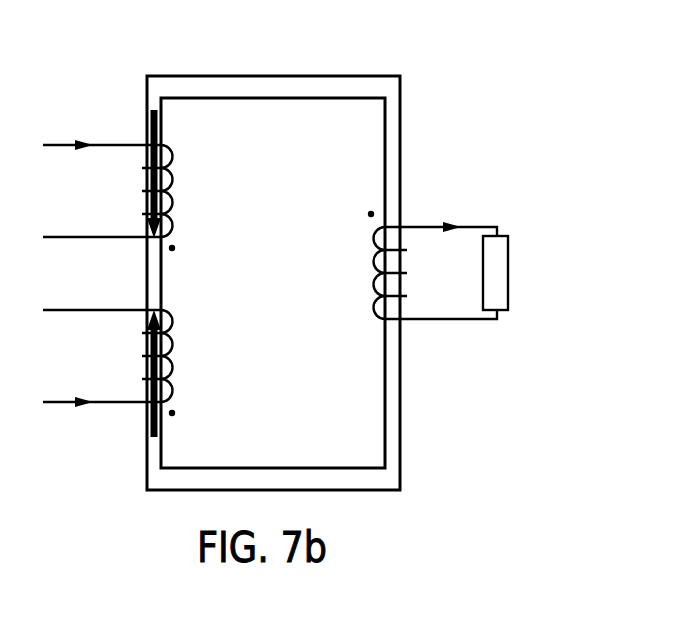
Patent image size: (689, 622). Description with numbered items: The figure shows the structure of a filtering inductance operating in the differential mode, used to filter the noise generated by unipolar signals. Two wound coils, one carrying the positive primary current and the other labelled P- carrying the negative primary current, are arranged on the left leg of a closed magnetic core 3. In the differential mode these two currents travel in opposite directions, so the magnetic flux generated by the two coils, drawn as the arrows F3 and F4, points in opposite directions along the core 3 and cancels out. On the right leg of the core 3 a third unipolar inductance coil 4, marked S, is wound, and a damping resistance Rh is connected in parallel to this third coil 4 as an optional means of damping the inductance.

The core 3 is at (380, 87).
The third unipolar inductance coil 4 is at (358, 263).
The magnetic flux arrow F3 is at (152, 195).
The magnetic flux arrow F4 is at (152, 350).
The negative primary winding P- is at (128, 375).
The secondary winding label S is at (323, 226).
The damping resistance Rh is at (465, 270).